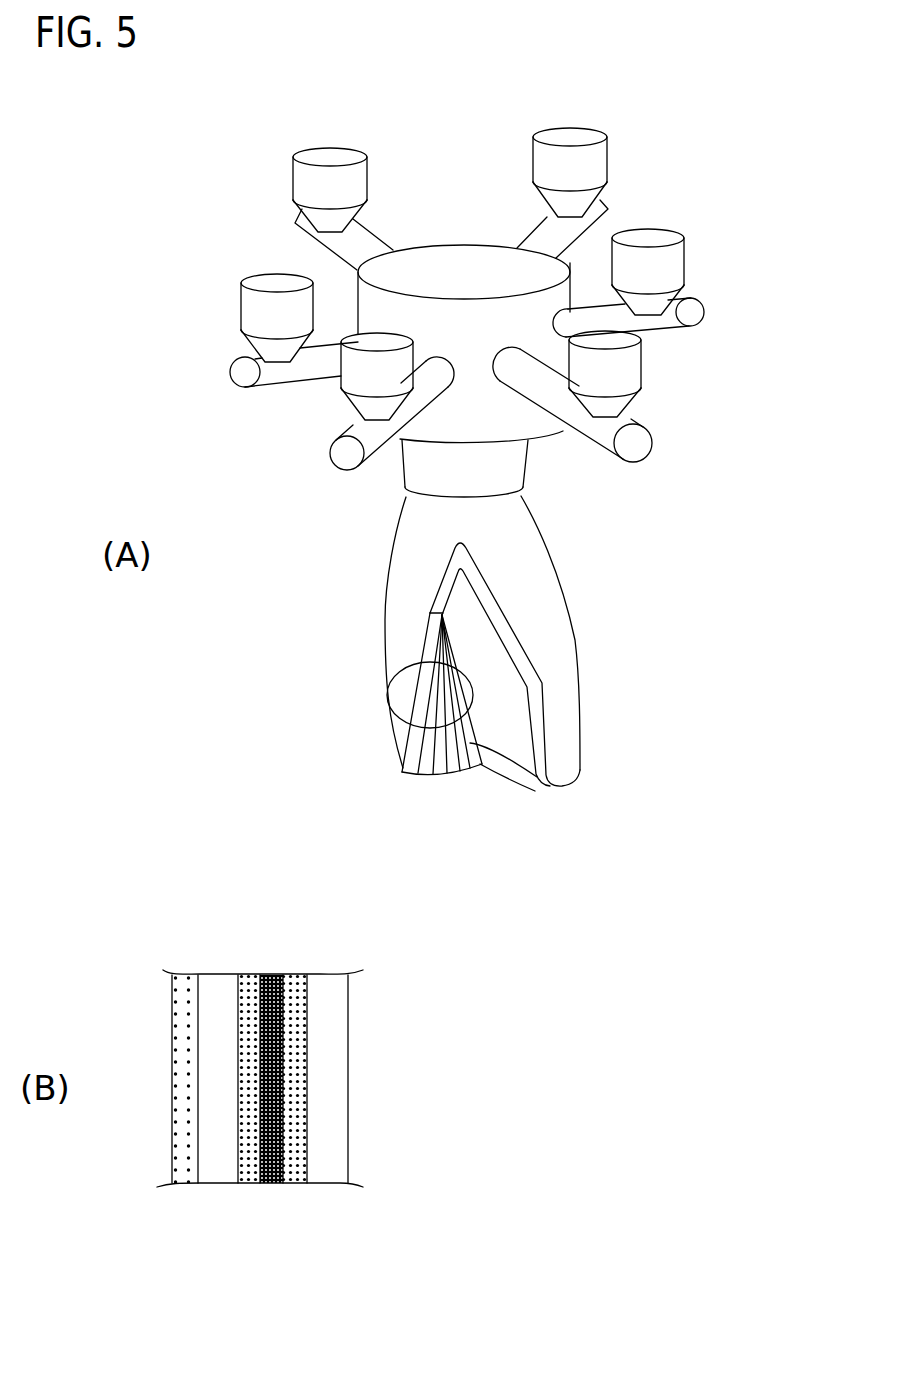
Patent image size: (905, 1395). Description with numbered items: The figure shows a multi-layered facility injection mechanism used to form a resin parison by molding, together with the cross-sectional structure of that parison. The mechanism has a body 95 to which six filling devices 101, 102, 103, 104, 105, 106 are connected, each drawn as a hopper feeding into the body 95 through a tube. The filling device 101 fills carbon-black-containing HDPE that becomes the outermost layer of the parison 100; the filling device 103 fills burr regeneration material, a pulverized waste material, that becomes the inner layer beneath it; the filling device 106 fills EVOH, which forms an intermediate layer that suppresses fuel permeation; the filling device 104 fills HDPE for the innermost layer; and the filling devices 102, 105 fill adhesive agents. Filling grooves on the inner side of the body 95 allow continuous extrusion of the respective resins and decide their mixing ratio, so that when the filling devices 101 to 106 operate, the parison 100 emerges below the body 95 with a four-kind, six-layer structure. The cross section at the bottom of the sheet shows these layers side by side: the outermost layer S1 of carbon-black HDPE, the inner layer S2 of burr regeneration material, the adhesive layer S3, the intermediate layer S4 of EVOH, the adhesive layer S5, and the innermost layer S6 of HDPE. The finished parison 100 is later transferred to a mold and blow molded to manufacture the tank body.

The body 95 is at (457, 262).
The parison 100 is at (577, 623).
The filling device 101 is at (300, 178).
The filling device 102 is at (250, 303).
The filling device 103 is at (357, 377).
The filling device 104 is at (633, 377).
The filling device 105 is at (673, 265).
The filling device 106 is at (600, 167).
The outermost layer S1 is at (407, 773).
The inner layer S2 is at (417, 775).
The adhesive agent layer S3 is at (433, 775).
The intermediate layer S4 is at (450, 775).
The adhesive agent layer S5 is at (463, 773).
The innermost layer S6 is at (520, 778).